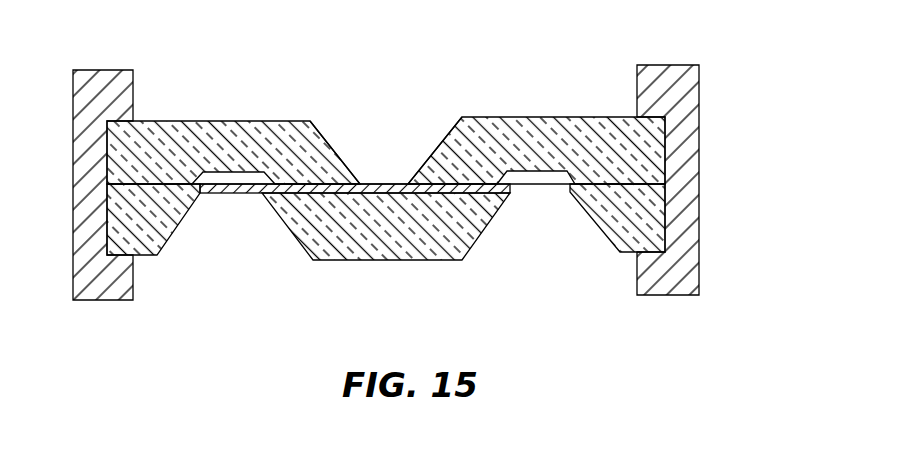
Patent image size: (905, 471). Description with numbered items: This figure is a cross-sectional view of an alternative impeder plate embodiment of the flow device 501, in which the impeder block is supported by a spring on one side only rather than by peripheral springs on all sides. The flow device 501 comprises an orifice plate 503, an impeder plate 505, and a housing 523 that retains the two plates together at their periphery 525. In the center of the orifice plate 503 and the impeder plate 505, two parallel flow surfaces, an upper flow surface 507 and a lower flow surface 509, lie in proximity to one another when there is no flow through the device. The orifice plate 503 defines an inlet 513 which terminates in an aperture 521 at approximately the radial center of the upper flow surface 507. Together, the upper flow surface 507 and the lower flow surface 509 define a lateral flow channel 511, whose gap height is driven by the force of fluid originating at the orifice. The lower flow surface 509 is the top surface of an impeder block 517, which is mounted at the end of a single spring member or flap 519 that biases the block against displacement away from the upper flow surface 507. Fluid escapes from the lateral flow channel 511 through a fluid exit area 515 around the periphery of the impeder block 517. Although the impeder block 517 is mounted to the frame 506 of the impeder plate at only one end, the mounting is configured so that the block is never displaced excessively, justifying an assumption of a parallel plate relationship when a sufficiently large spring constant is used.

The flow device 501 is at (228, 341).
The orifice plate 503 is at (518, 130).
The impeder plate 505 is at (120, 238).
The frame 506 is at (147, 223).
The upper flow surface 507 is at (297, 180).
The lower flow surface 509 is at (447, 188).
The lateral flow channel 511 is at (340, 157).
The inlet 513 is at (388, 135).
The fluid exit area 515 is at (358, 283).
The impeder block 517 is at (302, 237).
The spring member or flap 519 is at (260, 196).
The aperture 521 is at (380, 183).
The housing 523 is at (98, 82).
The periphery 525 is at (648, 185).